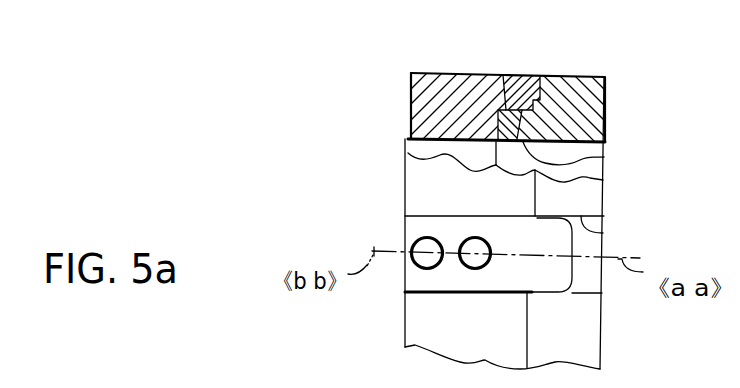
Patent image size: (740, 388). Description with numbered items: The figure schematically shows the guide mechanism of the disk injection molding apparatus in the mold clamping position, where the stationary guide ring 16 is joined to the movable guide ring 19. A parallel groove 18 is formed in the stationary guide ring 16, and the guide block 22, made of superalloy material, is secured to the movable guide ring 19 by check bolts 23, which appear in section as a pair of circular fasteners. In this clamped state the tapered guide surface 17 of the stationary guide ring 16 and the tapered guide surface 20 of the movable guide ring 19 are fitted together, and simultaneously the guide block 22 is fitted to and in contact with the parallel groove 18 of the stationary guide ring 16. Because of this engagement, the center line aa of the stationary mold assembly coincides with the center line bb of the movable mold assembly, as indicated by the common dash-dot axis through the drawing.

The stationary guide ring 16 is at (584, 70).
The tapered guide surface 17 is at (502, 73).
The parallel groove 18 is at (609, 232).
The movable guide ring 19 is at (448, 70).
The tapered guide surface 20 is at (605, 153).
The guide block 22 is at (545, 270).
The check bolt 23 is at (472, 238).